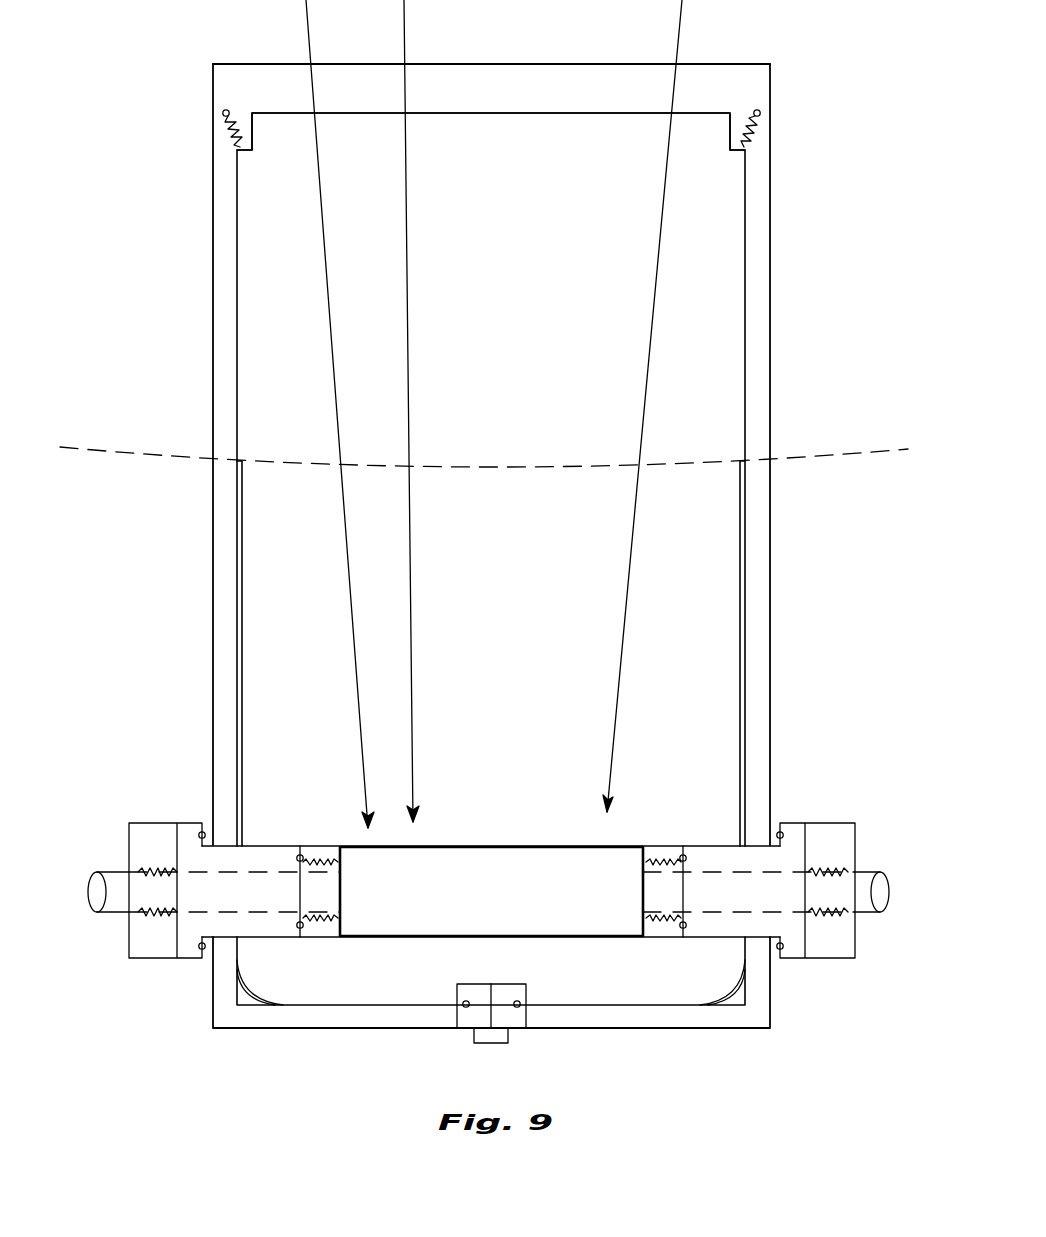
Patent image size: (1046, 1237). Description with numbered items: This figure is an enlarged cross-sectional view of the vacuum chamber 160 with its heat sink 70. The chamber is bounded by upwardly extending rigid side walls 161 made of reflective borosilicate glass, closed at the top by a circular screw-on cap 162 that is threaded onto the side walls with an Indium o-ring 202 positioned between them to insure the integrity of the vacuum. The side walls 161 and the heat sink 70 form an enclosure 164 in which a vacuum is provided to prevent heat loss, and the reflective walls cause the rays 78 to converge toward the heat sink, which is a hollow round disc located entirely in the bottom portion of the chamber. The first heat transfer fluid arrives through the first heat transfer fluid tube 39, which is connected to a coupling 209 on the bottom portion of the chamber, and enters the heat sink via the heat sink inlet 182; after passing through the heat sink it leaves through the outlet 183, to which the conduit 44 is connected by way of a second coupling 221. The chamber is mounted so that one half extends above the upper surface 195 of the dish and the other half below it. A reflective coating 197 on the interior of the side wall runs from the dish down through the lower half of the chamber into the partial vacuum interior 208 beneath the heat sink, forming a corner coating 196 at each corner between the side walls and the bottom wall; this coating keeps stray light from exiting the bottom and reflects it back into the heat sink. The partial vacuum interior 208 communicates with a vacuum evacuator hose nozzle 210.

The first heat transfer fluid tube 39 is at (117, 870).
The conduit 44 is at (866, 876).
The heat sink 70 is at (520, 868).
The rays 78 is at (409, 401).
The vacuum chamber 160 is at (770, 245).
The side walls 161 is at (222, 141).
The screw-on cap 162 is at (224, 85).
The enclosure 164 is at (728, 395).
The heat sink inlet 182 is at (305, 891).
The outlet 183 is at (685, 888).
The upper surface 195 is at (146, 453).
The corner coating 196 is at (255, 997).
The reflective coating 197 is at (243, 608).
The Indium o-ring 202 is at (229, 111).
The partial vacuum interior 208 is at (727, 984).
The coupling 209 is at (160, 855).
The vacuum evacuator hose nozzle 210 is at (470, 1044).
The second coupling 221 is at (830, 843).